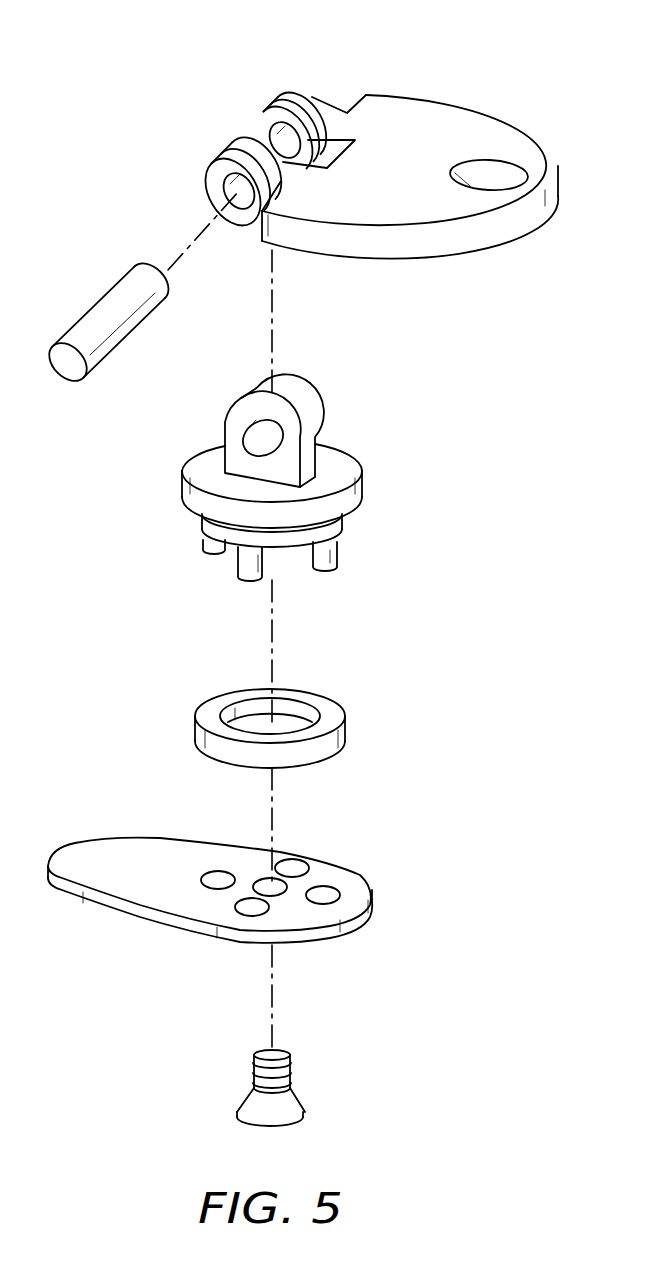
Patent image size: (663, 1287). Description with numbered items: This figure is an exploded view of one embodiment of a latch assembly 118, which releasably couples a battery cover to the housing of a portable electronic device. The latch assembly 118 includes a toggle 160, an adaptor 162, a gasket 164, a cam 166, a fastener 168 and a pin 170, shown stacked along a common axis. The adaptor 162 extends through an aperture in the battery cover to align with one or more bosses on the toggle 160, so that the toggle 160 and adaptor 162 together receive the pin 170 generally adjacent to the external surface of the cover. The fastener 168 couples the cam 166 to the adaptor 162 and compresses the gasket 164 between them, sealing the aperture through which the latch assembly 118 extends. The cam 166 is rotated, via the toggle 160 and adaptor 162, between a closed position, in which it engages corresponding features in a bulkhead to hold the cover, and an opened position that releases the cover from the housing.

The latch assembly 118 is at (146, 105).
The toggle 160 is at (443, 117).
The adaptor 162 is at (363, 480).
The gasket 164 is at (347, 732).
The cam 166 is at (373, 898).
The fastener 168 is at (305, 1110).
The pin 170 is at (92, 305).